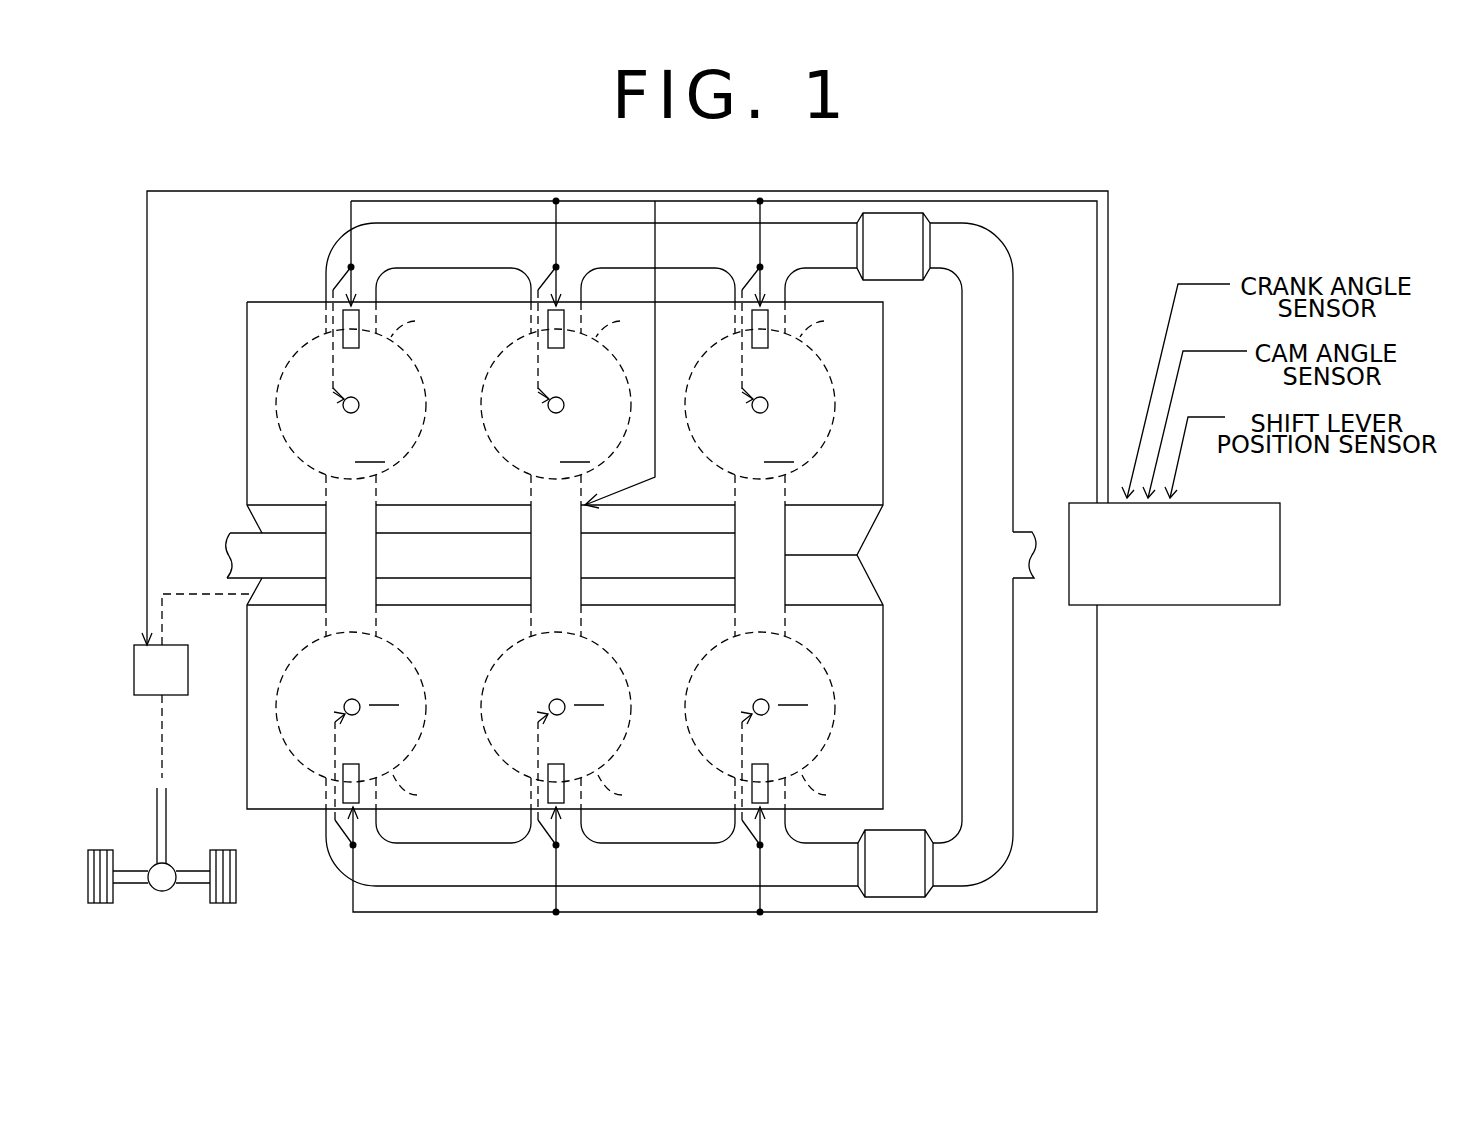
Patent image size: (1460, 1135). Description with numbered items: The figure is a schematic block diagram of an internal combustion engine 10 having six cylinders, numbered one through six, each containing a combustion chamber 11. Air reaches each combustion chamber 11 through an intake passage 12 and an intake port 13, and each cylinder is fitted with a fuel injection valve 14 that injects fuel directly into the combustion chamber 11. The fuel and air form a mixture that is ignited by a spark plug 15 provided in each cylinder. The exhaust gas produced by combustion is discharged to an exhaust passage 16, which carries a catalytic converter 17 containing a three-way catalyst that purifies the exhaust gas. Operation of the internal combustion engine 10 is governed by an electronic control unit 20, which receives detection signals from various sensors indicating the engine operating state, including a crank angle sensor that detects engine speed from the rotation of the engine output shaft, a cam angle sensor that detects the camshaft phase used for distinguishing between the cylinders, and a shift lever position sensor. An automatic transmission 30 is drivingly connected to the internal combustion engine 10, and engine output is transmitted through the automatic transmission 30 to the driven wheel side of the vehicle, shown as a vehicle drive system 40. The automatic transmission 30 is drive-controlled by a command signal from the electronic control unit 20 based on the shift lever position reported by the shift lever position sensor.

The internal combustion engine 10 is at (890, 470).
The combustion chamber 11 is at (574, 558).
The intake passage 12 is at (235, 533).
The intake port 13 is at (521, 555).
The fuel injection valve 14 is at (579, 556).
The spark plug 15 is at (560, 552).
The exhaust passage 16 is at (330, 262).
The catalytic converter 17 is at (902, 281).
The electronic control unit 20 is at (1220, 607).
The automatic transmission 30 is at (188, 668).
The vehicle drive system 40 is at (182, 847).